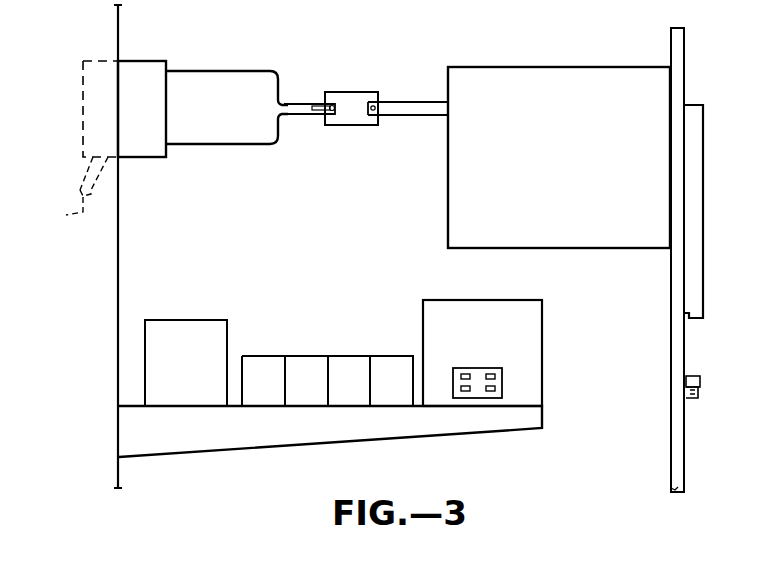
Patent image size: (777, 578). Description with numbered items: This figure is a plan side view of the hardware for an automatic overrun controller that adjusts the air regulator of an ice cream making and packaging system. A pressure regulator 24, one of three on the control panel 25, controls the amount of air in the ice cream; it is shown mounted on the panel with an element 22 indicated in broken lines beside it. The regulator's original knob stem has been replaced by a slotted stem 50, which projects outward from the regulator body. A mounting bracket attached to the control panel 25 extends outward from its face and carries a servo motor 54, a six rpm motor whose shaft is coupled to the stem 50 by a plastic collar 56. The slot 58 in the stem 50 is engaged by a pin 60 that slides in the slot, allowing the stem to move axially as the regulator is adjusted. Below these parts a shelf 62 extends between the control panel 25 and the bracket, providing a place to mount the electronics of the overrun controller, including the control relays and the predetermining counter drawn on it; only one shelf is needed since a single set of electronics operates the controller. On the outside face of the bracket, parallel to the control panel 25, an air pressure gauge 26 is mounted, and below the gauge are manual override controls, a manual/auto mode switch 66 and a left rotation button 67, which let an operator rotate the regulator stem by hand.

The work piece 22 is at (80, 143).
The pressure regulator 24 is at (213, 78).
The control panel 25 is at (118, 213).
The air pressure gauge 26 is at (695, 107).
The slotted stem 50 is at (300, 108).
The servo motor 54 is at (552, 80).
The plastic collar 56 is at (355, 117).
The slot 58 is at (313, 112).
The pin 60 is at (332, 103).
The shelf 62 is at (363, 425).
The manual/auto mode switch 66 is at (695, 398).
The left rotation button 67 is at (697, 377).